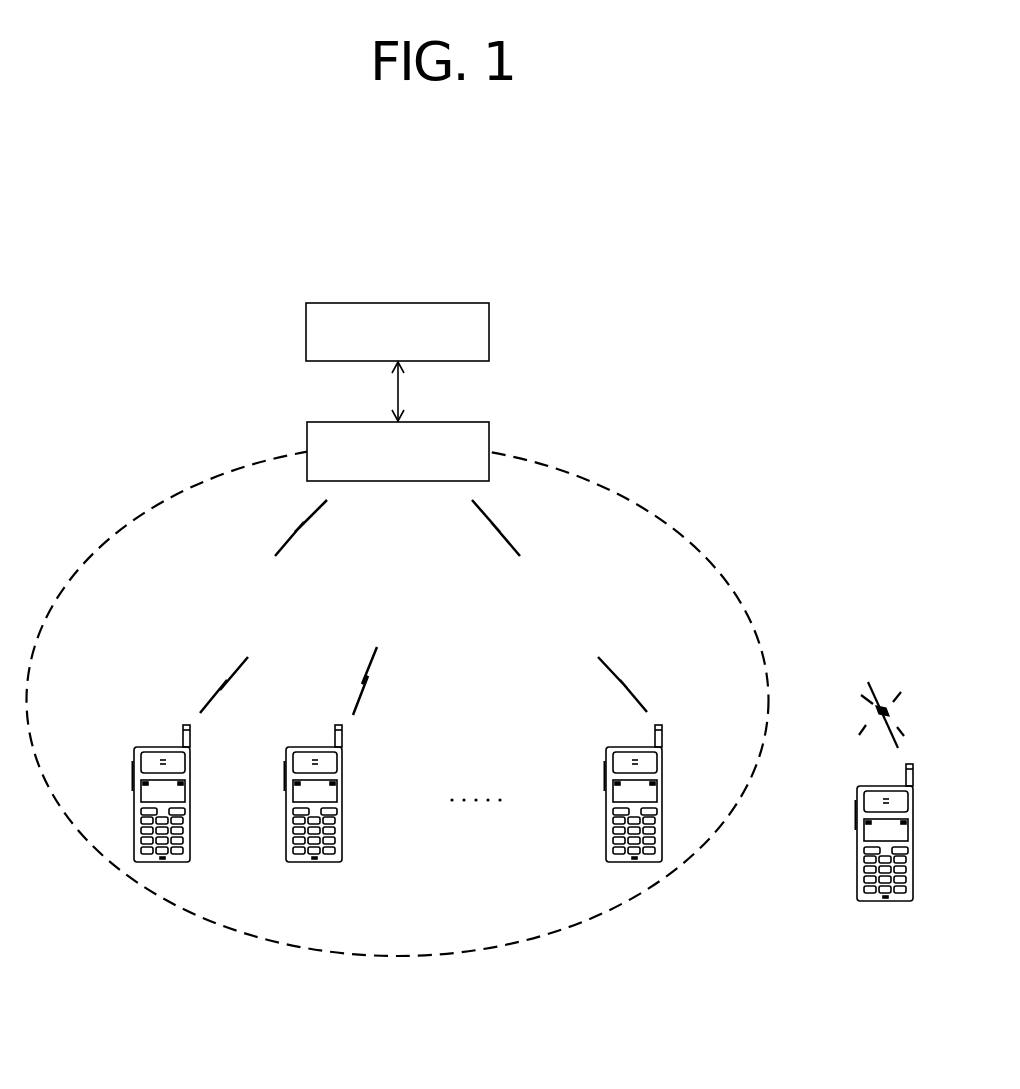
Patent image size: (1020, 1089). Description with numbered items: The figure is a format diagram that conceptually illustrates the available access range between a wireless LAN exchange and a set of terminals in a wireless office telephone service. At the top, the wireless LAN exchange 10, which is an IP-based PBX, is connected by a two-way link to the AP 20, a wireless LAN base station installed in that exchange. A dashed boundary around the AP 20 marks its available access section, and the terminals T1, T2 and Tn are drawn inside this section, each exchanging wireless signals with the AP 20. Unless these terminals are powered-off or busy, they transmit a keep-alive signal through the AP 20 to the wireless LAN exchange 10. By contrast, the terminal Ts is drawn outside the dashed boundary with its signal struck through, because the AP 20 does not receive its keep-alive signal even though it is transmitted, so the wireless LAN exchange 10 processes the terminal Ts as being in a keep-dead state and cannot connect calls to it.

The wireless LAN exchange 10 is at (489, 326).
The AP 20 is at (489, 427).
The terminal T1 is at (191, 846).
The terminal T2 is at (343, 846).
The terminal Tn is at (605, 846).
The terminal Ts is at (856, 886).